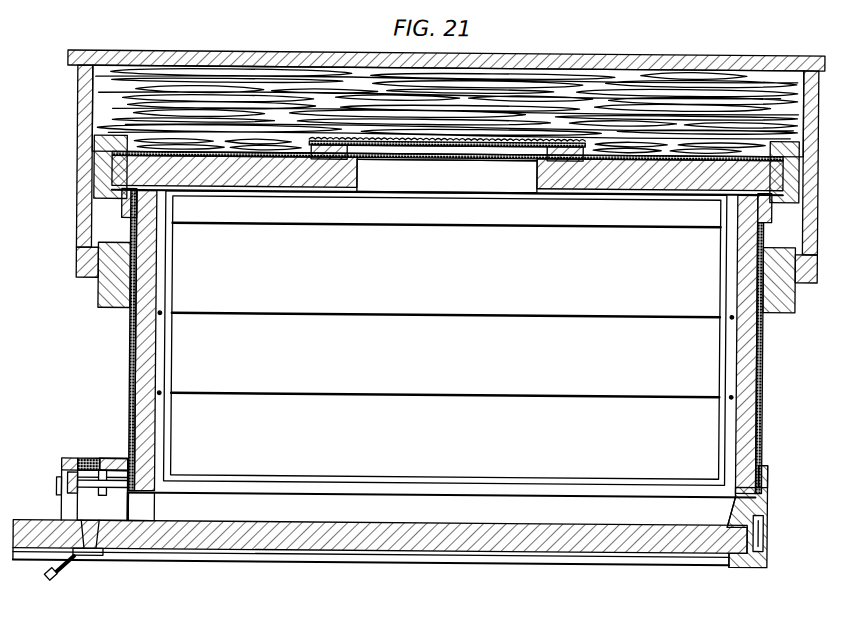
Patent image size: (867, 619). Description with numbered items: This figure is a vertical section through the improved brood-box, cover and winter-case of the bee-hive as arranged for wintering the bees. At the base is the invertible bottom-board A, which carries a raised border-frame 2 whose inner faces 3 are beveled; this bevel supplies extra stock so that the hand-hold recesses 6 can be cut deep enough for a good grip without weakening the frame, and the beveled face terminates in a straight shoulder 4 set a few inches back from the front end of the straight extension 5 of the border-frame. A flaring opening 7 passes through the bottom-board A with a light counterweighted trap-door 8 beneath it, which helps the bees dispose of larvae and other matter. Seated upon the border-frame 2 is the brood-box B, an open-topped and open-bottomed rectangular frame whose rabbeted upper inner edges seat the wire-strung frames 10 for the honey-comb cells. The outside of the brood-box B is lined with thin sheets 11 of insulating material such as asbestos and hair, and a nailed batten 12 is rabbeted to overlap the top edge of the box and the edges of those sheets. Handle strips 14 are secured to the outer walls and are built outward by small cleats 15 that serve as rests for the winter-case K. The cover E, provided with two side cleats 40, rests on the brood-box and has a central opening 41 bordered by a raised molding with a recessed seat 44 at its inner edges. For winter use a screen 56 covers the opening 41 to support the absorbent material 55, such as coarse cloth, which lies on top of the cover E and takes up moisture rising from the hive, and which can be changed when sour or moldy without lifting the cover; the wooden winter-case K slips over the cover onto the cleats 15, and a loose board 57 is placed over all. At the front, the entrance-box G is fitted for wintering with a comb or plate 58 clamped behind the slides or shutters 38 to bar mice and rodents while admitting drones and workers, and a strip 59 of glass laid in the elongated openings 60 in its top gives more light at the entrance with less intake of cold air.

The loose board 57 is at (556, 54).
The absorbent material 55 is at (655, 92).
The winter-case K is at (80, 128).
The side cleats 40 is at (100, 177).
The cleats 15 is at (82, 246).
The handle strips 14 is at (105, 305).
The cover E is at (589, 176).
The screen 56 is at (453, 140).
The recessed seat 44 is at (361, 142).
The central opening 41 is at (447, 175).
The brood-box B is at (762, 393).
The sheets of insulating material 11 is at (765, 426).
The wire-strung frame 10 is at (513, 208).
The bottom-board A is at (492, 544).
The border-frame 2 is at (769, 494).
The batten 12 is at (770, 477).
The hand-hold recesses 6 is at (777, 534).
The inner faces 3 is at (734, 505).
The shoulder 4 is at (158, 506).
The entrance-box G is at (67, 460).
The strip of glass 59 is at (86, 457).
The elongated openings 60 is at (102, 458).
The comb or plate 58 is at (76, 508).
The slides or shutters 38 is at (62, 488).
The trap-door 8 is at (101, 557).
The flaring opening 7 is at (76, 554).
The straight extension 5 is at (132, 506).